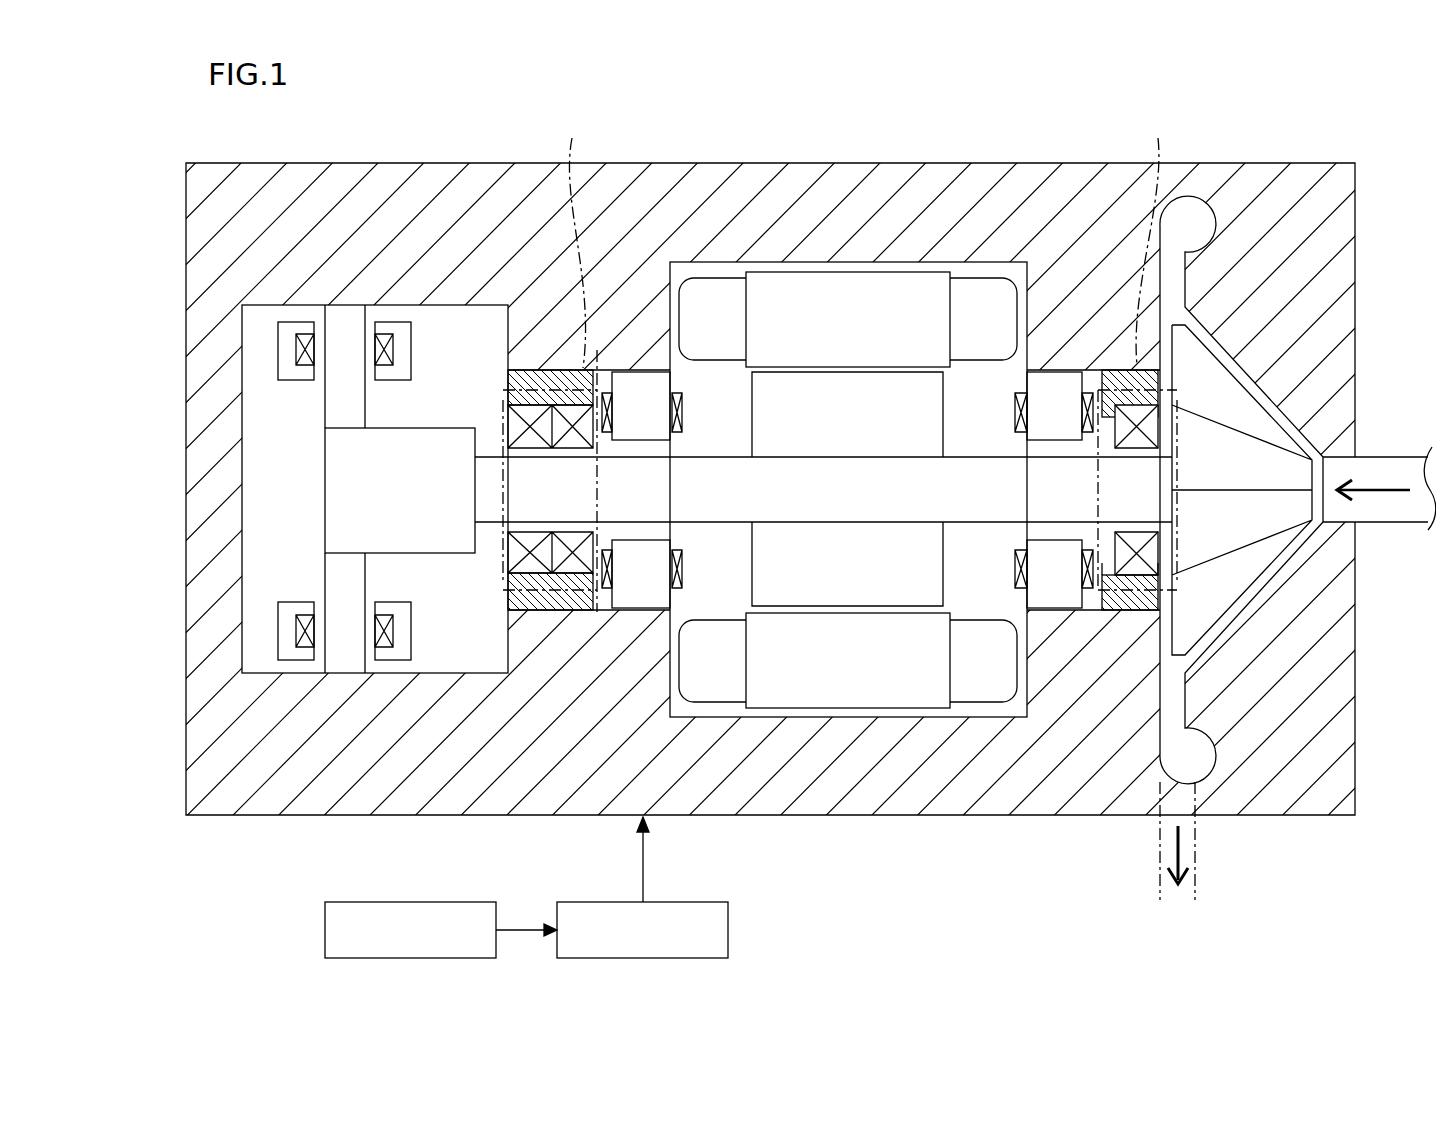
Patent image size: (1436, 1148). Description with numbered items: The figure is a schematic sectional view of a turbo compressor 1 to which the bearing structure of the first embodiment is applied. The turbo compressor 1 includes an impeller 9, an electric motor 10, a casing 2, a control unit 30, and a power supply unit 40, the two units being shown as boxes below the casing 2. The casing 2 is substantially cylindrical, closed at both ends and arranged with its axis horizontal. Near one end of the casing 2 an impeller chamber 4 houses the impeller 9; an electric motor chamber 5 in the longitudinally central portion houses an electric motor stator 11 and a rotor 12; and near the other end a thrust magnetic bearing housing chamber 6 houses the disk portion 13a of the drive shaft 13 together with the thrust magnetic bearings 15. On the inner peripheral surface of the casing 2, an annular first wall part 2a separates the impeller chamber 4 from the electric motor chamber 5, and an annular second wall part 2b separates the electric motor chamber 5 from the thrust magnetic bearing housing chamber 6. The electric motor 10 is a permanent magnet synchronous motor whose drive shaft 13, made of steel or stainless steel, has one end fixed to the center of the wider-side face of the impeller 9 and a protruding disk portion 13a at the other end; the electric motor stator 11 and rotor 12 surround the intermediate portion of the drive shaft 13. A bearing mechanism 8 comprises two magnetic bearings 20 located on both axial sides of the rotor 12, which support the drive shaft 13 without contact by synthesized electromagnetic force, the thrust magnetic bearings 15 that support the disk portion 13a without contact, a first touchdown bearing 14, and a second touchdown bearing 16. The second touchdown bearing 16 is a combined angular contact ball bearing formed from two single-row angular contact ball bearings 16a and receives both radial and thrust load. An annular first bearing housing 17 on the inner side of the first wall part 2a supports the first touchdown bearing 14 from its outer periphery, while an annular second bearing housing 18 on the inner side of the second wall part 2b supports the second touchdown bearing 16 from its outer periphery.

The turbo compressor 1 is at (1344, 134).
The casing 2 is at (856, 152).
The first wall part 2a is at (1122, 700).
The second wall part 2b is at (626, 676).
The impeller chamber 4 is at (1326, 470).
The electric motor chamber 5 is at (848, 569).
The thrust magnetic bearing housing chamber 6 is at (320, 489).
The bearing mechanism 8 is at (688, 413).
The impeller 9 is at (1232, 573).
The electric motor 10 is at (840, 716).
The electric motor stator 11 is at (893, 700).
The rotor 12 is at (940, 600).
The drive shaft 13 is at (720, 512).
The disk portion 13a is at (345, 340).
The first touchdown bearing 14 is at (1130, 372).
The thrust magnetic bearings 15 is at (291, 652).
The second touchdown bearing 16 is at (569, 568).
The single-row angular contact ball bearings 16a is at (520, 372).
The first bearing housing 17 is at (1095, 610).
The second bearing housing 18 is at (518, 610).
The magnetic bearings 20 is at (641, 378).
The control unit 30 is at (325, 925).
The power supply unit 40 is at (728, 925).